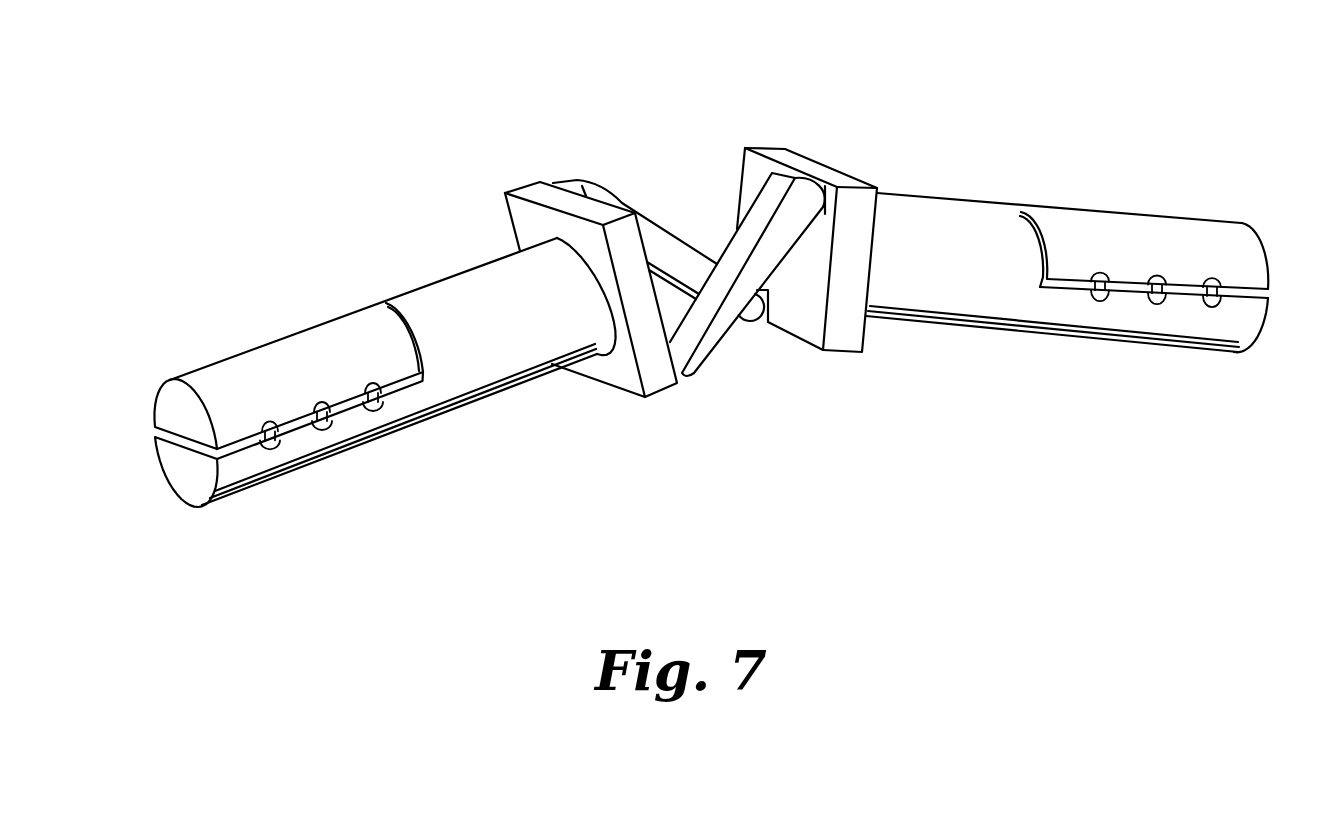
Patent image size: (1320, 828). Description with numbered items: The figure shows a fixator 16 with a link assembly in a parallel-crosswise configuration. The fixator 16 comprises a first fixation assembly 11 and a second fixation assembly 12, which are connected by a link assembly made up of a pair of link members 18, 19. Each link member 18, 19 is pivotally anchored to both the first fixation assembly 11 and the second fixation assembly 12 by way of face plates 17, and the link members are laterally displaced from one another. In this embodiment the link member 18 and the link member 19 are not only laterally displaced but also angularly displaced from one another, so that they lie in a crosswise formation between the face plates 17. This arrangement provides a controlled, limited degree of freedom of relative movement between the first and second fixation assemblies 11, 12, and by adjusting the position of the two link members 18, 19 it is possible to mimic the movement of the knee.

The first fixation assembly 11 is at (418, 308).
The second fixation assembly 12 is at (1000, 228).
The fixator 16 is at (355, 133).
The face plates 17 is at (533, 192).
The link member 18 is at (673, 252).
The link member 19 is at (720, 317).